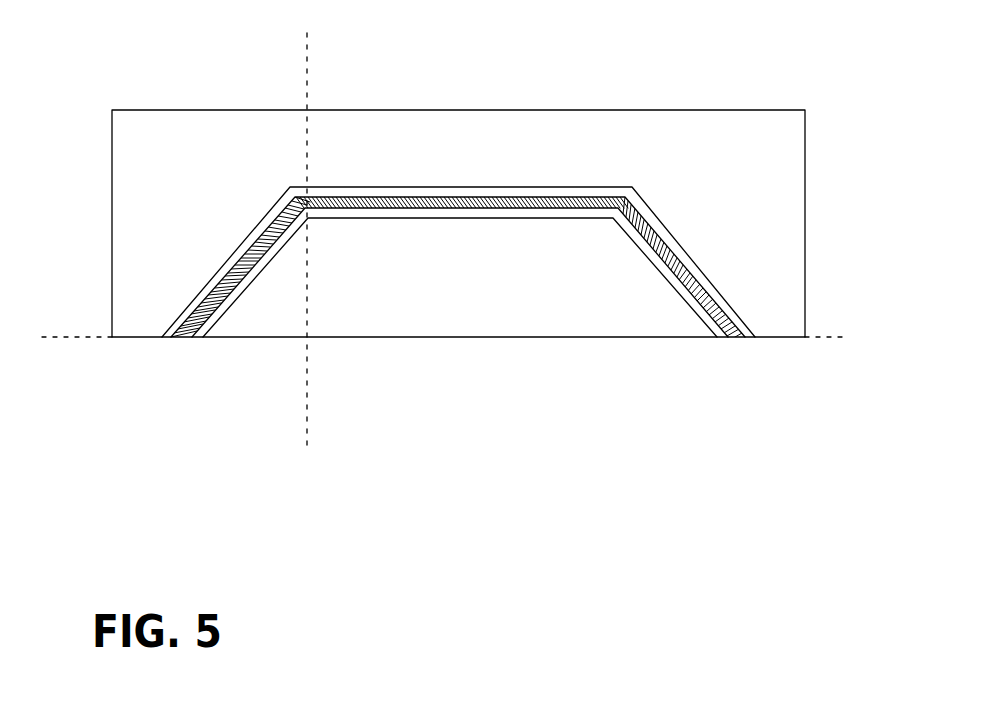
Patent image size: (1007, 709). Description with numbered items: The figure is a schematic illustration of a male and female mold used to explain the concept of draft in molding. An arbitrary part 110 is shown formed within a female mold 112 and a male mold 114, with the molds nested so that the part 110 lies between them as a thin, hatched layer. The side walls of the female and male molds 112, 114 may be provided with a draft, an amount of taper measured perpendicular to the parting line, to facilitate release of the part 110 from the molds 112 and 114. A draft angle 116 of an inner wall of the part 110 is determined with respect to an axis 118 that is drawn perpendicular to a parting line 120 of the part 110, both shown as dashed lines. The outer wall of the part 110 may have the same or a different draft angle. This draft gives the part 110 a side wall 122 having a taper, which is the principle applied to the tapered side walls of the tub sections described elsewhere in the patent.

The part 110 is at (718, 292).
The female mold 112 is at (738, 200).
The male mold 114 is at (585, 293).
The draft angle 116 is at (278, 238).
The axis 118 is at (307, 362).
The parting line 120 is at (92, 340).
The side wall 122 is at (680, 262).